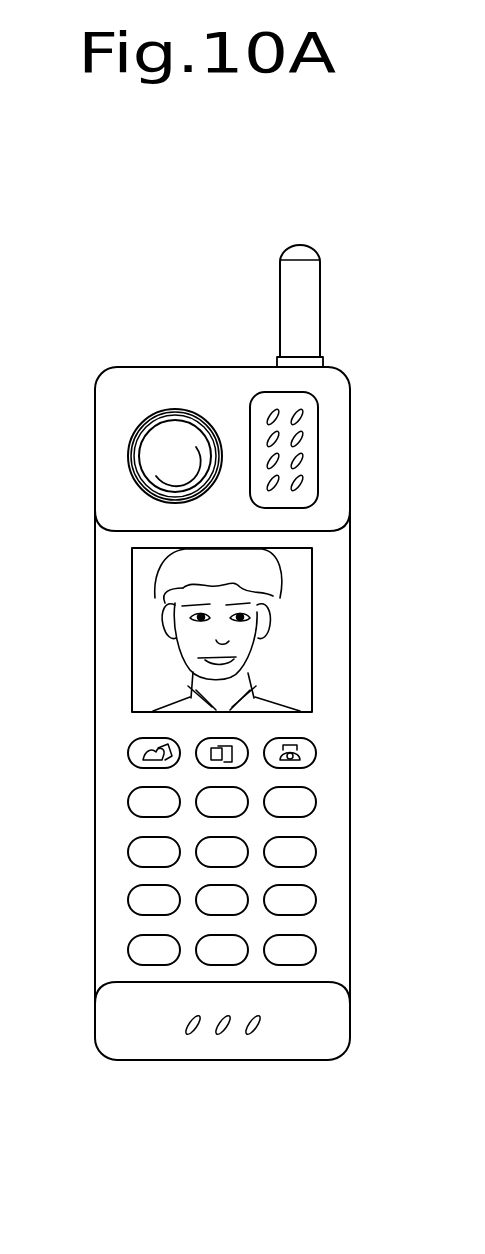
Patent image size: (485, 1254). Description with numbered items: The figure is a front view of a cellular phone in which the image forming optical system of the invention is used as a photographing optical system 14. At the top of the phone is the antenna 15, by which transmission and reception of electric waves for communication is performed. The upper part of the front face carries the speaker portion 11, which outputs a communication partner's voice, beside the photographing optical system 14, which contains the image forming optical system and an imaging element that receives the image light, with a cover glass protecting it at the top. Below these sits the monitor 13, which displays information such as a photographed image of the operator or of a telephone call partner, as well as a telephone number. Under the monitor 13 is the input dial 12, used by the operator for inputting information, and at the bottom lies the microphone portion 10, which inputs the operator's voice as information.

The microphone portion 10 is at (302, 1035).
The speaker portion 11 is at (262, 400).
The input dial 12 is at (138, 857).
The monitor 13 is at (295, 590).
The photographing optical system 14 is at (145, 458).
The antenna 15 is at (293, 283).